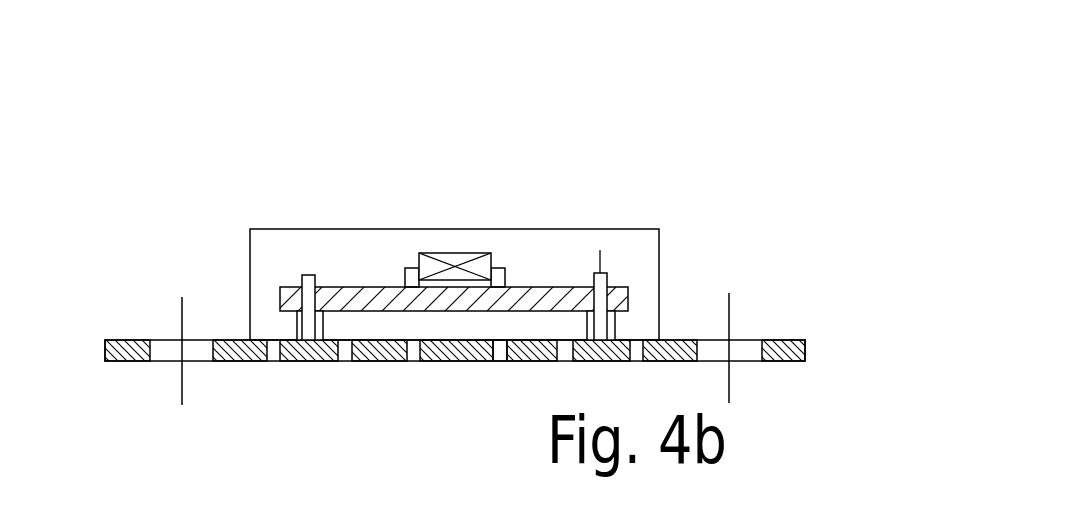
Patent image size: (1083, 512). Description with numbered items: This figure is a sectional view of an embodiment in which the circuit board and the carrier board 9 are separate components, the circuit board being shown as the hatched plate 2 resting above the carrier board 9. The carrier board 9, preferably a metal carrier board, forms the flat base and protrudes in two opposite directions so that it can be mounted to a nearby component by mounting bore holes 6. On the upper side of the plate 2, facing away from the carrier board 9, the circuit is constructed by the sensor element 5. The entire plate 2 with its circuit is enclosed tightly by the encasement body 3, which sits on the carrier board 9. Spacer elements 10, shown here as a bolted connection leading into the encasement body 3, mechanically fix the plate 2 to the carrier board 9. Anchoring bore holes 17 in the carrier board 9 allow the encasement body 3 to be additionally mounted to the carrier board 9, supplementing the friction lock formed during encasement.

The carrier plate 2 is at (290, 290).
The encasement body 3 is at (468, 247).
The sensor element 5 is at (448, 257).
The mounting bore holes 6 is at (182, 315).
The carrier board 9 is at (783, 352).
The spacer elements 10 is at (307, 275).
The anchoring bore holes 17 is at (500, 342).